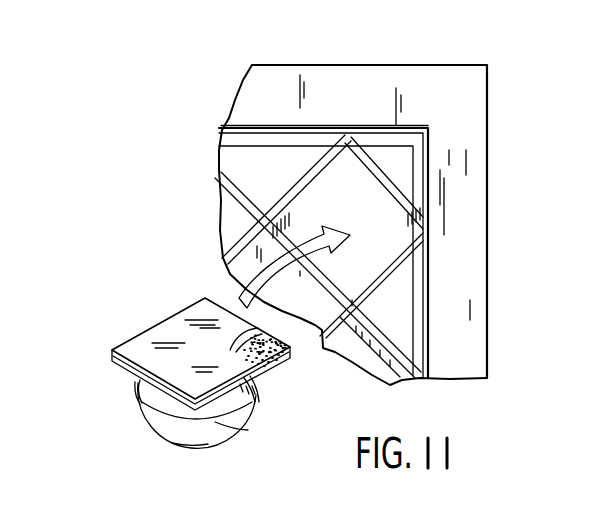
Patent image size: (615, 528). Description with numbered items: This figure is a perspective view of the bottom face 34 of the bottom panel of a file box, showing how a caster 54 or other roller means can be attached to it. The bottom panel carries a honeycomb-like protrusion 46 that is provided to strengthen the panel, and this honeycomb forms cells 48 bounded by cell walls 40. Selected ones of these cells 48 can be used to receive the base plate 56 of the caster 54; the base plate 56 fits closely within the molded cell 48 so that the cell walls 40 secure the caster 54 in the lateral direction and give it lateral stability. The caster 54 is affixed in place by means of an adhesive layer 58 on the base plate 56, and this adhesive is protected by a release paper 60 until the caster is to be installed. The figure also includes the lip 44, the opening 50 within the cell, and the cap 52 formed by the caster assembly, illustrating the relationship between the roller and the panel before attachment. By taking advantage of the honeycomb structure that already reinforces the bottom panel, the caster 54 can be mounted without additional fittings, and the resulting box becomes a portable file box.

The bottom face 34 is at (496, 91).
The cell walls 40 is at (402, 179).
The frame lip 44 is at (436, 200).
The honeycomb-like protrusion 46 is at (273, 116).
The cells 48 is at (235, 234).
The lattice opening 50 is at (397, 248).
The cap 52 is at (187, 404).
The caster 54 is at (136, 445).
The base plate 56 is at (271, 380).
The adhesive layer 58 is at (284, 341).
The release paper 60 is at (184, 333).